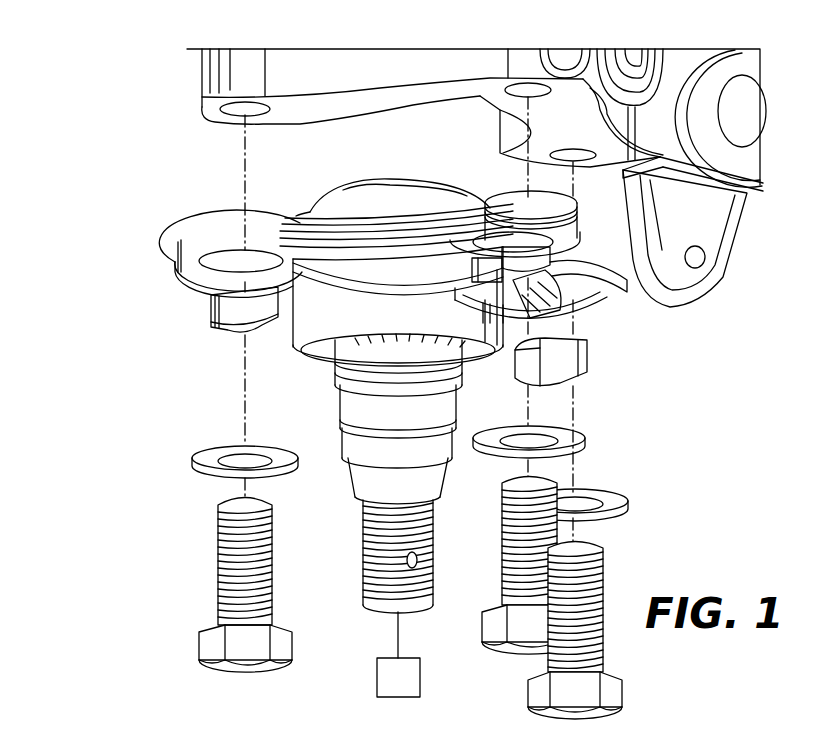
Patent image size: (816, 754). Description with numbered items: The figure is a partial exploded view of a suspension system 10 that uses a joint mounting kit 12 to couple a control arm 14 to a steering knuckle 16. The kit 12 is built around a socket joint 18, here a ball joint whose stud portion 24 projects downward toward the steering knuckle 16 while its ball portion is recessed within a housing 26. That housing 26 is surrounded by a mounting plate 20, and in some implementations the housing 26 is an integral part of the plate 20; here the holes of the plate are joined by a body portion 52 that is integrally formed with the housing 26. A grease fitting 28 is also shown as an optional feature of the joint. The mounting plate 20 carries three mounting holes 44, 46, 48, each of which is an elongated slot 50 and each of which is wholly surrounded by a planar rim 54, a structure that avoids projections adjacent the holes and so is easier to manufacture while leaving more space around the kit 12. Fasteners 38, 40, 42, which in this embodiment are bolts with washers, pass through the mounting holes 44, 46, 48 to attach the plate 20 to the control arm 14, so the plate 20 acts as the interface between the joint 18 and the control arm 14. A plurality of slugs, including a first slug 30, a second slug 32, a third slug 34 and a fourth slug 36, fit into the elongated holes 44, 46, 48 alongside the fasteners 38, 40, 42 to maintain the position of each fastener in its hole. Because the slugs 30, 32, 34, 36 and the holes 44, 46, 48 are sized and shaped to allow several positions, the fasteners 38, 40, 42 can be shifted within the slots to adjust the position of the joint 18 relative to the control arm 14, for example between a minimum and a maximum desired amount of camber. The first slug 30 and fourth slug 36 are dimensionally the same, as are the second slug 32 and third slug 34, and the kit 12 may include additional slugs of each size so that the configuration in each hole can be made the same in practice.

The suspension system 10 is at (150, 700).
The joint mounting kit 12 is at (150, 390).
The control arm 14 is at (398, 63).
The steering knuckle 16 is at (385, 692).
The socket joint 18 is at (362, 494).
The mounting plate 20 is at (303, 228).
The stud portion 24 is at (375, 551).
The housing 26 is at (300, 357).
The grease fitting 28 is at (565, 318).
The first slug 30 is at (573, 373).
The second slug 32 is at (547, 260).
The third slug 34 is at (481, 280).
The fourth slug 36 is at (223, 327).
The fastener 38 is at (590, 713).
The fastener 40 is at (508, 653).
The fastener 42 is at (240, 678).
The mounting hole 44 is at (605, 305).
The mounting hole 46 is at (515, 232).
The mounting hole 48 is at (225, 263).
The elongated slot 50 is at (240, 260).
The body portion 52 is at (430, 247).
The planar rim 54 is at (188, 268).